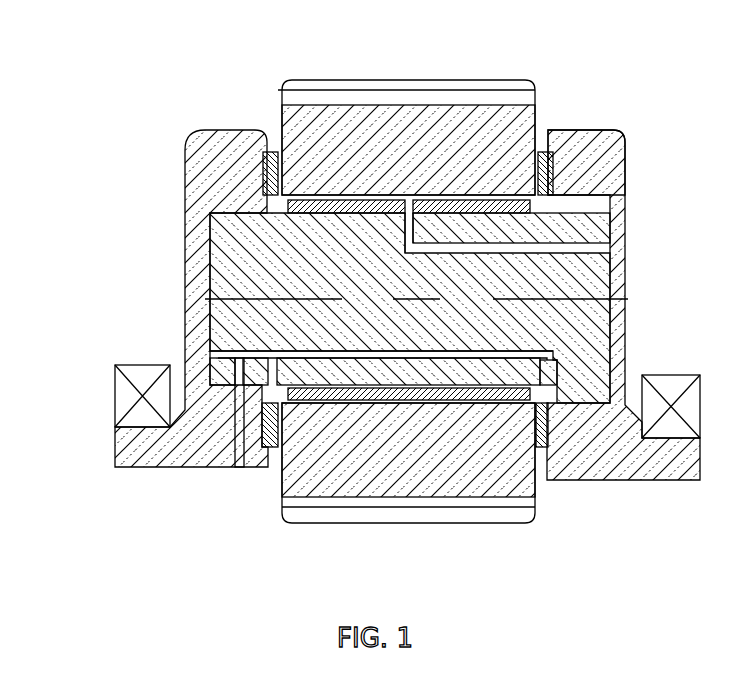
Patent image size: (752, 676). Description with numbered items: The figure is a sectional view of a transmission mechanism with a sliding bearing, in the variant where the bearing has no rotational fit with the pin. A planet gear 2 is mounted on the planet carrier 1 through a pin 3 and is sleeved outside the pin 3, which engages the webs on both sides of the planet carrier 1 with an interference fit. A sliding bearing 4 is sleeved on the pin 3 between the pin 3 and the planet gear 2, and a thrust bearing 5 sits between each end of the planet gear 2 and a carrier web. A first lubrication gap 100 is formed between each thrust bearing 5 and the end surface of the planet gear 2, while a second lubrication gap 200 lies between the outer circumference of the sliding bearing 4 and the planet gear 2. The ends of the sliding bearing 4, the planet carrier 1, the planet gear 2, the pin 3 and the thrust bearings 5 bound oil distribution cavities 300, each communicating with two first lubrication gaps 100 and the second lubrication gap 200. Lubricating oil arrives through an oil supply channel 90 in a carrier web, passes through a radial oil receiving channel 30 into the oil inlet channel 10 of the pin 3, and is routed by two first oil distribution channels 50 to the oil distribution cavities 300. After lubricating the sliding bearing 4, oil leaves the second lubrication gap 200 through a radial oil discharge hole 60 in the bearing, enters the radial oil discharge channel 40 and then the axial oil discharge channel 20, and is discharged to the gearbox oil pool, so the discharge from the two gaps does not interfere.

The planet carrier 1 is at (213, 167).
The planet gear 2 is at (411, 228).
The pin 3 is at (593, 332).
The sliding bearing 4 is at (352, 198).
The thrust bearing 5 is at (267, 152).
The oil inlet channel 10 is at (333, 353).
The axial oil discharge channel 20 is at (546, 247).
The oil receiving channel 30 is at (242, 374).
The radial oil discharge channel 40 is at (608, 163).
The first oil distribution channel 50 is at (262, 370).
The radial oil discharge hole 60 is at (413, 200).
The oil supply channel 90 is at (239, 418).
The first lubrication gap 100 is at (542, 444).
The second lubrication gap 200 is at (310, 195).
The oil distribution cavity 300 is at (267, 399).